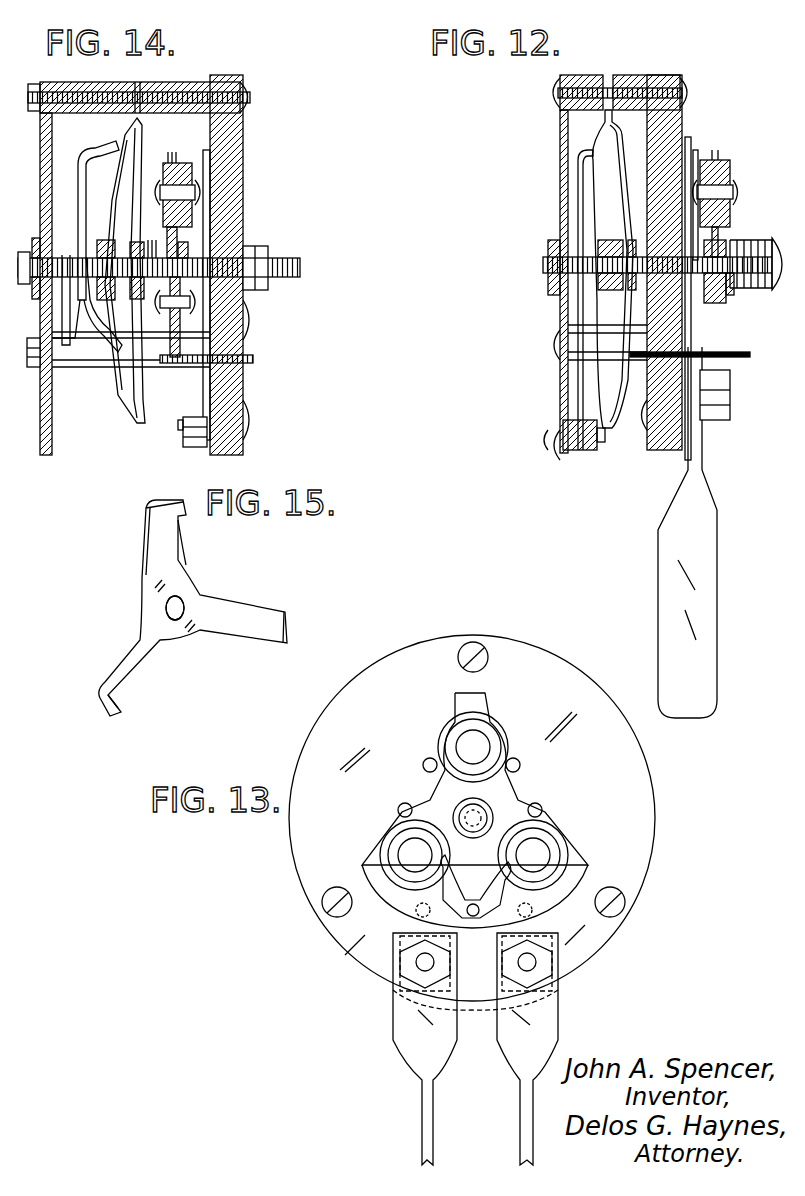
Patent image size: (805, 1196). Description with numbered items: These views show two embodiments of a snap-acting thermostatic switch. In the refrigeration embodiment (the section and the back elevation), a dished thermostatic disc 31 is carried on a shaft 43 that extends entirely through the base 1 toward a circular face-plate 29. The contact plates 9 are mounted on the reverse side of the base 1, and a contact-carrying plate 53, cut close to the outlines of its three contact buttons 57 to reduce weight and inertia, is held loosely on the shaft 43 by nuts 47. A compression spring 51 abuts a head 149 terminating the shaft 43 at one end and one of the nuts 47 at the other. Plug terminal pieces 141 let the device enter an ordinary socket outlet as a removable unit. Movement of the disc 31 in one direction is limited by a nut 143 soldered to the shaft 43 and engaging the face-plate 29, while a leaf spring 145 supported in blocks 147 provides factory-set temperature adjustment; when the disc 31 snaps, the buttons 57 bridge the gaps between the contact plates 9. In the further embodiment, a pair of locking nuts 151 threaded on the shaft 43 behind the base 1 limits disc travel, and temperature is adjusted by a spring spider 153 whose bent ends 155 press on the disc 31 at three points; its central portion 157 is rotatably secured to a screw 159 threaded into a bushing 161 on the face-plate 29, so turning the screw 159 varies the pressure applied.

In FIG. 14, the base 1 is at (243, 197).
In FIG. 12, the base 1 is at (670, 122).
In FIG. 13, the base 1 is at (640, 800).
In FIG. 12, the contact plates 9 is at (692, 143).
In FIG. 13, the contact plates 9 is at (447, 717).
In FIG. 14, the face-plate 29 is at (53, 440).
In FIG. 12, the face-plate 29 is at (560, 205).
In FIG. 14, the thermostatic disc 31 is at (125, 172).
In FIG. 12, the thermostatic disc 31 is at (603, 150).
In FIG. 14, the shaft 43 is at (292, 268).
In FIG. 12, the shaft 43 is at (748, 282).
In FIG. 12, the nuts 47 is at (736, 292).
In FIG. 12, the compression spring 51 is at (730, 245).
In FIG. 12, the contact-carrying plate 53 is at (722, 240).
In FIG. 13, the contact-carrying plate 53 is at (485, 793).
In FIG. 12, the contact buttons 57 is at (742, 176).
In FIG. 13, the contact buttons 57 is at (452, 743).
In FIG. 12, the plug terminal pieces 141 is at (672, 623).
In FIG. 13, the plug terminal pieces 141 is at (422, 1128).
In FIG. 12, the nut 143 is at (553, 298).
In FIG. 12, the leaf spring 145 is at (578, 195).
In FIG. 12, the blocks 147 is at (578, 452).
In FIG. 12, the head 149 is at (778, 242).
In FIG. 13, the head 149 is at (457, 815).
In FIG. 14, the nuts 151 is at (262, 246).
In FIG. 14, the spring spider 153 is at (77, 185).
In FIG. 15, the spring spider 153 is at (112, 627).
In FIG. 14, the bent ends 155 is at (110, 146).
In FIG. 15, the bent ends 155 is at (165, 500).
In FIG. 14, the central portion 157 is at (80, 247).
In FIG. 15, the central portion 157 is at (192, 590).
In FIG. 14, the screw 159 is at (66, 347).
In FIG. 14, the bushing 161 is at (40, 300).